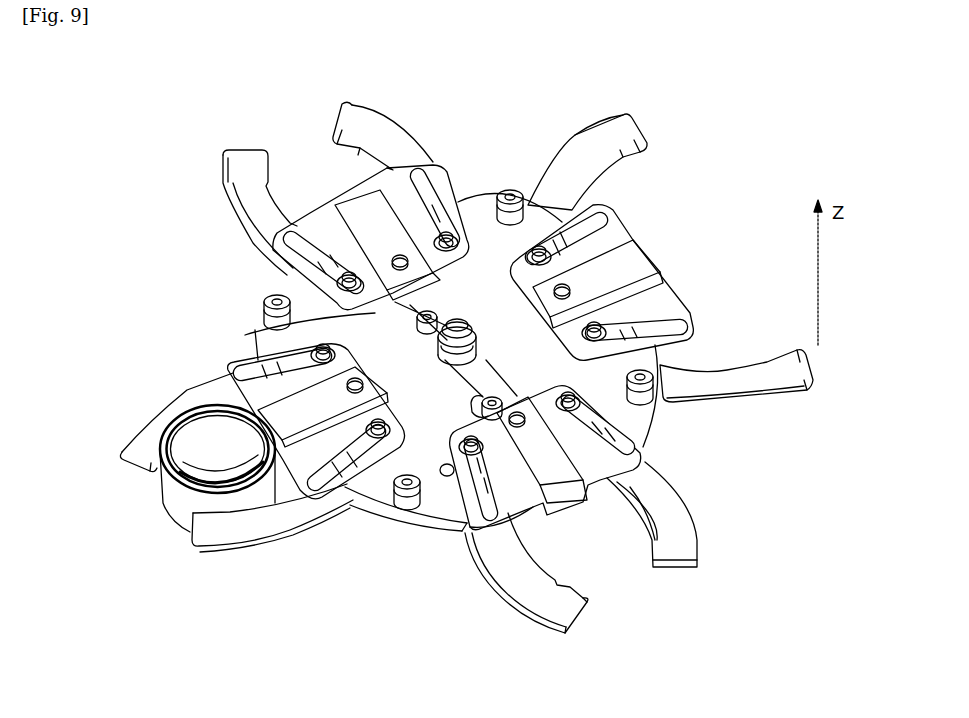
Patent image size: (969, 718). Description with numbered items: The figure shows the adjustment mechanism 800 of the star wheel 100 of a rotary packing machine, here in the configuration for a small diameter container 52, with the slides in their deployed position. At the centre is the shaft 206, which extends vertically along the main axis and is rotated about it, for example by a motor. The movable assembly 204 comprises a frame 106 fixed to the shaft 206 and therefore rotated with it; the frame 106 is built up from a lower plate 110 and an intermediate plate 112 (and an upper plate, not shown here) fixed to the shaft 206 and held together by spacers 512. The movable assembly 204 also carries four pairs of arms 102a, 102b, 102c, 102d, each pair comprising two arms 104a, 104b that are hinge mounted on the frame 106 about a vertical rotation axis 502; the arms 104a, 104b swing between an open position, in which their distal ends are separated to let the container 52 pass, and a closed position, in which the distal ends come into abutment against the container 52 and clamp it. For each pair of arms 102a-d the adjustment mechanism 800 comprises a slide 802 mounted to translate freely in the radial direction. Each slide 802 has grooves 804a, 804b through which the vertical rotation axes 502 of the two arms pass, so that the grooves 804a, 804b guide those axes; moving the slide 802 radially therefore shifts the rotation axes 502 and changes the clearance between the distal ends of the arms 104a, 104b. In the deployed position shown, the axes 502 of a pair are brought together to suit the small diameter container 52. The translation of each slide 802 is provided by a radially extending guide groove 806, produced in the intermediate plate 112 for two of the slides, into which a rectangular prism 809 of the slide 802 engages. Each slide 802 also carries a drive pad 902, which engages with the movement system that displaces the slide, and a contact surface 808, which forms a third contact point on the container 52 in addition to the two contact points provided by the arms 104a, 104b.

The star wheel 100 is at (700, 198).
The pair of arms 102a is at (629, 588).
The pair of arms 102b is at (803, 422).
The pair of arms 102c is at (265, 148).
The pair of arms 102d is at (132, 487).
The arm 104a is at (563, 633).
The arm 104b is at (687, 568).
The frame 106 is at (245, 391).
The lower plate 110 is at (436, 514).
The intermediate plate 112 is at (390, 512).
The movable assembly 204 is at (183, 287).
The shaft 206 is at (461, 325).
The vertical rotation axis 502 is at (343, 283).
The spacer 512 is at (670, 392).
The small diameter container 52 is at (228, 443).
The adjustment mechanism 800 is at (332, 196).
The slide 802 is at (586, 469).
The groove 804a is at (680, 315).
The groove 804b is at (597, 226).
The guide groove 806 is at (330, 336).
The contact surface 808 is at (637, 283).
The rectangular prism 809 is at (545, 505).
The drive pad 902 is at (577, 505).